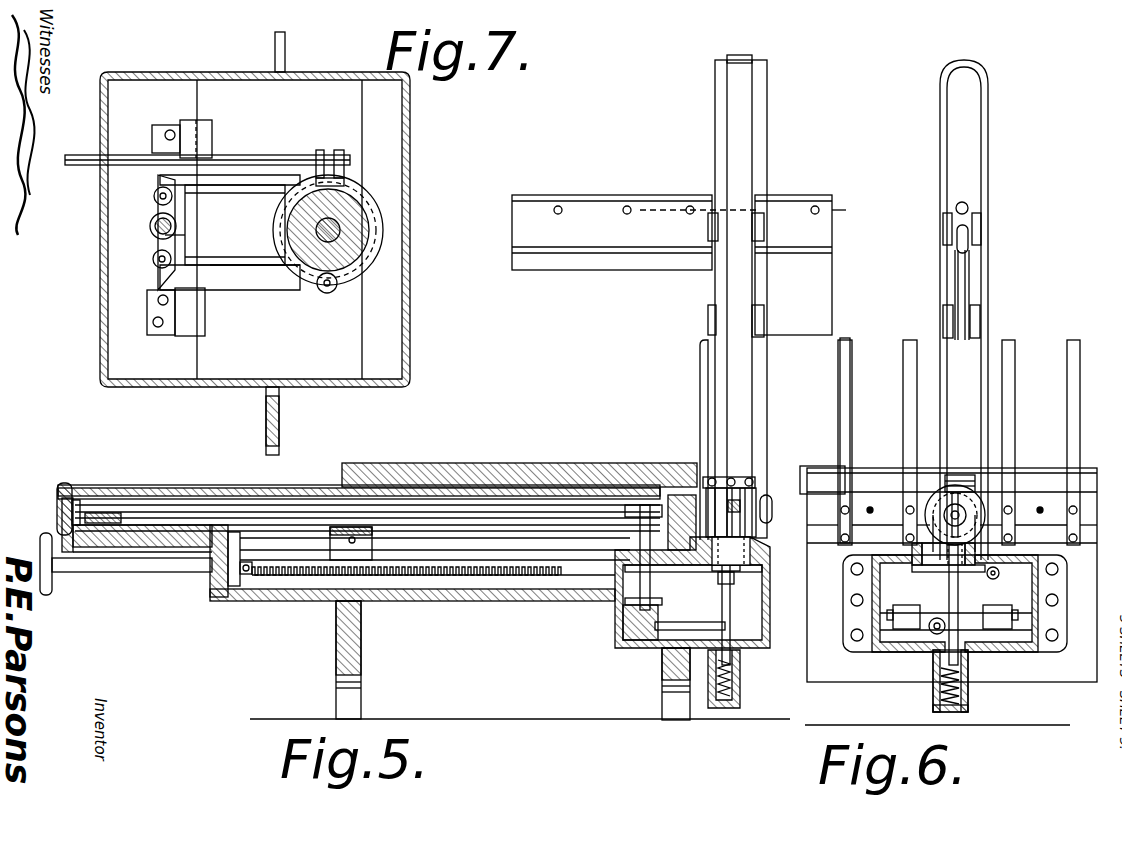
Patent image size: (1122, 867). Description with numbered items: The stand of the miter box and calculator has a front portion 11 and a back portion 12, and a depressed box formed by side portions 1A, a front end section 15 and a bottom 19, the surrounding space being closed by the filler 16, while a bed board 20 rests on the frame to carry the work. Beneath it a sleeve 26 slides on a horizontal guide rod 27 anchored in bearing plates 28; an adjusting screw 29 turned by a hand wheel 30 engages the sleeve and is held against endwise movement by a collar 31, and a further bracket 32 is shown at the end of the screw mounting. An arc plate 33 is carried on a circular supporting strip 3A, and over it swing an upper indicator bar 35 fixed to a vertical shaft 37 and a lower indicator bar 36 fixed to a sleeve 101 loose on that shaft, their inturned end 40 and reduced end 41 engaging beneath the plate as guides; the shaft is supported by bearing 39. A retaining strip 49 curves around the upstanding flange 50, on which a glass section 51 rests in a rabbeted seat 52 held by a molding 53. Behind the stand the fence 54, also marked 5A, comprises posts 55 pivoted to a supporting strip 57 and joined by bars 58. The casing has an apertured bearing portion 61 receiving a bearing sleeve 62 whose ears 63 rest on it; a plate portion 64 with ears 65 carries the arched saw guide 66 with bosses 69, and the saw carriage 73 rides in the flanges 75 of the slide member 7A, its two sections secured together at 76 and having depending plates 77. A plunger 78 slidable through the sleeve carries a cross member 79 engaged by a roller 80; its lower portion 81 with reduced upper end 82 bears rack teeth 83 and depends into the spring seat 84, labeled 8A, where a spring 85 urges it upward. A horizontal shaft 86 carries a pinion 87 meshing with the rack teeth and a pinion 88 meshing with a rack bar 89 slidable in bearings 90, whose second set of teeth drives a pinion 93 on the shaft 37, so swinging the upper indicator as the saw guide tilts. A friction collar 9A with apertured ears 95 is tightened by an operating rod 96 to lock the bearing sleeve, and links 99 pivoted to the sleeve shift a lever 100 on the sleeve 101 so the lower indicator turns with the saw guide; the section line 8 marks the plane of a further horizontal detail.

In FIG. 5, the side portions 1A is at (513, 585).
In FIG. 5, the supporting strip 3A is at (112, 512).
In FIG. 6, the fence 5A is at (1025, 442).
In FIG. 6, the slide member 7A is at (970, 270).
In FIG. 5, the section line 8— 8 is at (599, 589).
In FIG. 5, the spring seat 8A is at (712, 695).
In FIG. 7, the friction collar 9A is at (380, 240).
In FIG. 5, the friction collar 9A is at (745, 567).
In FIG. 5, the front portion 11 is at (345, 638).
In FIG. 5, the back portion 12 is at (638, 740).
In FIG. 6, the back portion 12 is at (1092, 678).
In FIG. 5, the front end section 15 is at (212, 555).
In FIG. 5, the front filler 16 is at (150, 540).
In FIG. 5, the bottom 19 is at (462, 603).
In FIG. 5, the bed board 20 is at (512, 462).
In FIG. 6, the bed board 20 is at (873, 478).
In FIG. 5, the sleeve 26 is at (290, 538).
In FIG. 5, the guide rods 27 is at (447, 578).
In FIG. 5, the bearing plates 28 is at (305, 580).
In FIG. 5, the adjusting screws 29 is at (395, 603).
In FIG. 5, the hand wheels 30 is at (47, 575).
In FIG. 5, the collars 31 is at (244, 578).
In FIG. 5, the bracket 32 is at (230, 580).
In FIG. 5, the arc plate 33 is at (95, 510).
In FIG. 6, the arc plate 33 is at (875, 642).
In FIG. 5, the upper indicator bar 35 is at (400, 510).
In FIG. 5, the lower indicator bar 36 is at (530, 530).
In FIG. 7, the vertical shaft 37 is at (180, 236).
In FIG. 5, the vertical shaft 37 is at (643, 505).
In FIG. 7, the bearing 39 is at (408, 163).
In FIG. 5, the bearing 39 is at (618, 620).
In FIG. 6, the bearing 39 is at (1040, 638).
In FIG. 5, the inturned end 40 is at (62, 507).
In FIG. 5, the reduced end 41 is at (118, 555).
In FIG. 5, the retaining strip 49 is at (58, 488).
In FIG. 5, the upstanding flange 50 is at (62, 530).
In FIG. 5, the plate glass section 51 is at (200, 485).
In FIG. 5, the rabbeted seat 52 is at (690, 520).
In FIG. 5, the molding 53 is at (75, 484).
In FIG. 5, the fence 54 is at (698, 412).
In FIG. 5, the posts 55 is at (700, 368).
In FIG. 6, the posts 55 is at (912, 392).
In FIG. 5, the supporting strip 57 is at (735, 470).
In FIG. 6, the supporting strip 57 is at (1085, 472).
In FIG. 6, the connecting bars 58 is at (1048, 542).
In FIG. 5, the bearing portion 61 is at (762, 552).
In FIG. 6, the bearing portion 61 is at (875, 553).
In FIG. 7, the bearing sleeve 62 is at (356, 222).
In FIG. 5, the bearing sleeve 62 is at (760, 528).
In FIG. 6, the bearing sleeve 62 is at (880, 577).
In FIG. 5, the spaced ears 63 is at (730, 470).
In FIG. 6, the spaced ears 63 is at (972, 500).
In FIG. 6, the horizontal plate portion 64 is at (955, 475).
In FIG. 5, the apertured ears 65 is at (814, 450).
In FIG. 5, the saw guide 66 is at (762, 142).
In FIG. 6, the saw guide 66 is at (945, 150).
In FIG. 5, the bosses 69 is at (742, 180).
In FIG. 6, the bosses 69 is at (985, 150).
In FIG. 5, the saw carriage 73 is at (605, 232).
In FIG. 6, the saw carriage 73 is at (955, 210).
In FIG. 5, the angular flanges 75 is at (718, 226).
In FIG. 6, the angular flanges 75 is at (943, 224).
In FIG. 5, the securing means 76 is at (625, 206).
In FIG. 6, the depending plate portions 77 is at (962, 284).
In FIG. 7, the plunger 78 is at (338, 236).
In FIG. 5, the plunger 78 is at (735, 596).
In FIG. 6, the plunger 78 is at (990, 527).
In FIG. 5, the cross member 79 is at (738, 480).
In FIG. 5, the roller 80 is at (742, 500).
In FIG. 5, the lower plunger portion 81 is at (732, 610).
In FIG. 6, the lower plunger portion 81 is at (962, 657).
In FIG. 6, the reduced upper end 82 is at (962, 580).
In FIG. 5, the rack teeth 83 is at (742, 668).
In FIG. 6, the spring seat 84 is at (1004, 699).
In FIG. 5, the coiled expansion spring 85 is at (728, 705).
In FIG. 6, the coiled expansion spring 85 is at (945, 712).
In FIG. 7, the horizontal shaft 86 is at (250, 268).
In FIG. 5, the horizontal shaft 86 is at (700, 618).
In FIG. 6, the horizontal shaft 86 is at (928, 637).
In FIG. 5, the pinion 87 is at (668, 682).
In FIG. 6, the pinion 87 is at (940, 642).
In FIG. 5, the pinion 88 is at (650, 640).
In FIG. 7, the rack bar 89 is at (235, 225).
In FIG. 5, the rack bar 89 is at (672, 572).
In FIG. 6, the rack bar 89 is at (975, 614).
In FIG. 7, the bearings 90 is at (205, 137).
In FIG. 6, the bearings 90 is at (905, 605).
In FIG. 7, the pinion 93 is at (375, 268).
In FIG. 5, the pinion 93 is at (622, 627).
In FIG. 7, the apertured ear 95 is at (330, 148).
In FIG. 7, the operating rod 96 is at (80, 165).
In FIG. 6, the operating rod 96 is at (1000, 574).
In FIG. 7, the links 99 is at (247, 178).
In FIG. 5, the links 99 is at (625, 580).
In FIG. 7, the lever 100 is at (158, 208).
In FIG. 5, the lever 100 is at (635, 558).
In FIG. 7, the sleeve 101 is at (152, 232).
In FIG. 5, the sleeve 101 is at (640, 510).